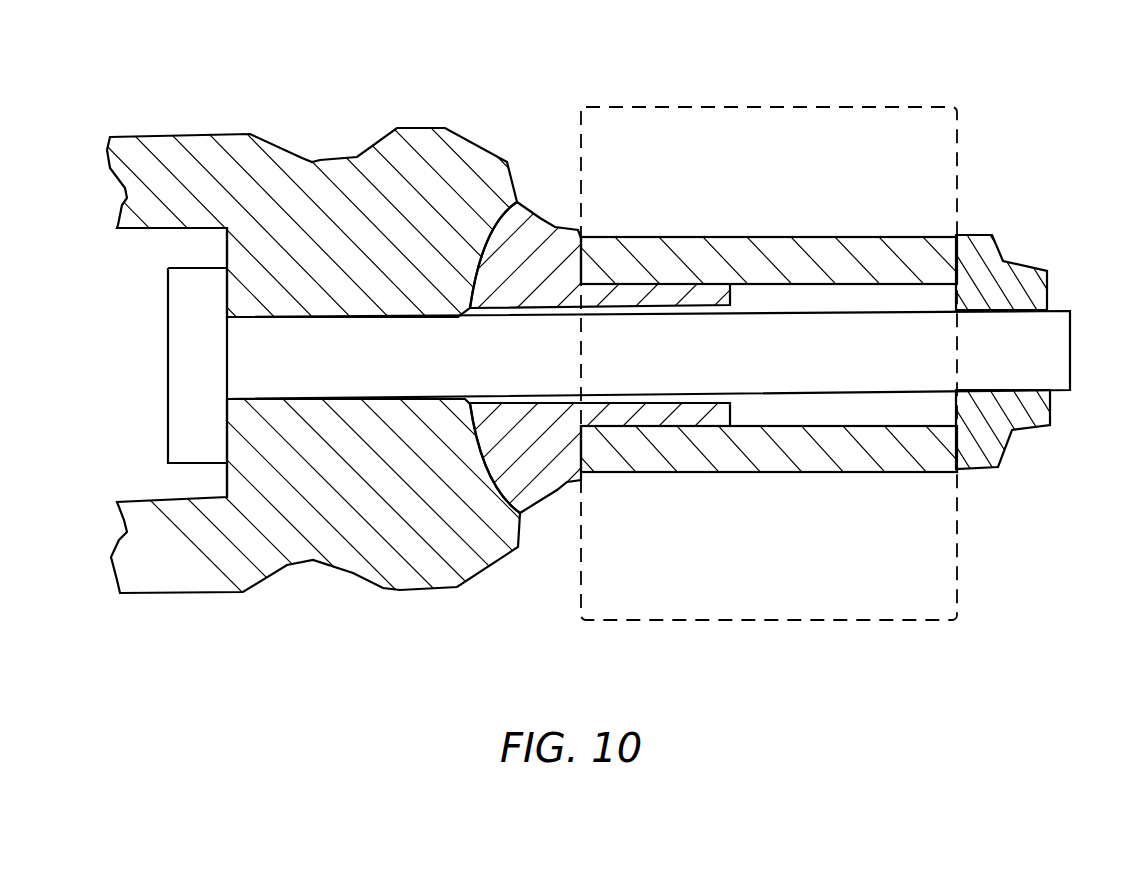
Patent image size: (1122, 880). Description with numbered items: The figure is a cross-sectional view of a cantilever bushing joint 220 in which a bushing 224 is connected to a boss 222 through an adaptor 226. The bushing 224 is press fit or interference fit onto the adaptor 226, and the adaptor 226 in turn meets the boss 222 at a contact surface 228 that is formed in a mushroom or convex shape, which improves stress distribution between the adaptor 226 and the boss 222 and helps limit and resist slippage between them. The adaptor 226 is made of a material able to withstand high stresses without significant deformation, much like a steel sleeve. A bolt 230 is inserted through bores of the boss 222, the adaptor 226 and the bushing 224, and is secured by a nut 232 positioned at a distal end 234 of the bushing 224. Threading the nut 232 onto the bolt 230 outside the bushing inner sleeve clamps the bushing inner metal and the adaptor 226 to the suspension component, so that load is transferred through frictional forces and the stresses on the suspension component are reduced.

The cantilever bushing joint 220 is at (840, 35).
The boss 222 is at (300, 488).
The bushing 224 is at (730, 447).
The adaptor 226 is at (535, 233).
The contact surface 228 is at (477, 463).
The bolt 230 is at (428, 365).
The nut 232 is at (1005, 452).
The distal end 234 is at (960, 255).